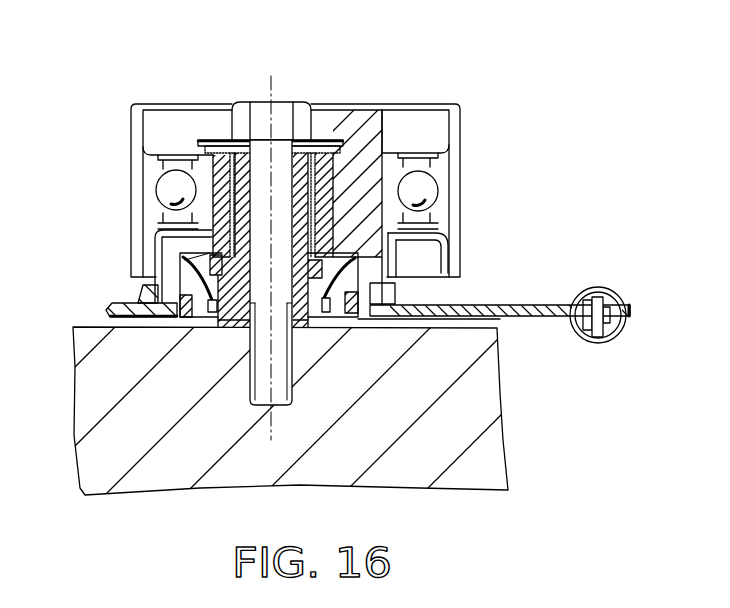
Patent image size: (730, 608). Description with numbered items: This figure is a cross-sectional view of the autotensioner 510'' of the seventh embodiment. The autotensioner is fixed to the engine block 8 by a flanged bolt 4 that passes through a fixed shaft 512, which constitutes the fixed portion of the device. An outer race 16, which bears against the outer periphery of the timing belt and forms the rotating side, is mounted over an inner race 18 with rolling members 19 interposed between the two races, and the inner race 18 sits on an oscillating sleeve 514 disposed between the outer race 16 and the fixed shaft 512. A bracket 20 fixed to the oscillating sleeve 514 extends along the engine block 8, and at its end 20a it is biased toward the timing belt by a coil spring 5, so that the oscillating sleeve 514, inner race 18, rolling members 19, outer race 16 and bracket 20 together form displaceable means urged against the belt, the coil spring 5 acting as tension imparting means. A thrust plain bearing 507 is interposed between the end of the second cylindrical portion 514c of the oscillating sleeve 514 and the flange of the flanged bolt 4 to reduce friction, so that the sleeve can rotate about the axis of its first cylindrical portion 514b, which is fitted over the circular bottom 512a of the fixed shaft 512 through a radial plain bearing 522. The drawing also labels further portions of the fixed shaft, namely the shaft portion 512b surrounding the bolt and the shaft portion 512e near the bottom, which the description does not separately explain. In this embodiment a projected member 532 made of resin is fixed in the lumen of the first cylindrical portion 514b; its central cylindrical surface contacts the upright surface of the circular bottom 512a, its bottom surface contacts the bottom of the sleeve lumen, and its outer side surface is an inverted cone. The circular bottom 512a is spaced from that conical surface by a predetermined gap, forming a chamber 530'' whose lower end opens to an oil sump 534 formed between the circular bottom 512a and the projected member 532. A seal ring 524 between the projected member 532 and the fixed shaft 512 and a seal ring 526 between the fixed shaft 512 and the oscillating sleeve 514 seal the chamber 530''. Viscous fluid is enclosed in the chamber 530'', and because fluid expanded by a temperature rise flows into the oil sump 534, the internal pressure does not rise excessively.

The flanged bolt 4 is at (284, 100).
The coil spring 5 is at (617, 298).
The engine block 8 is at (492, 403).
The outer race 16 is at (450, 196).
The inner race 18 is at (430, 217).
The rolling members 19 is at (430, 183).
The bracket 20 is at (553, 304).
The end of bracket 20a is at (607, 338).
The thrust plain bearing 507 is at (232, 142).
The autotensioner 510'' is at (365, 304).
The fixed shaft 512 is at (170, 328).
The circular bottom 512a is at (237, 327).
The sleeve 512b is at (320, 148).
The sleeve wall 512e is at (310, 345).
The oscillating sleeve 514 is at (350, 163).
The first cylindrical portion 514b is at (160, 240).
The second cylindrical portion 514c is at (382, 152).
The radial plain bearing 522 is at (154, 251).
The seal ring 524 is at (285, 295).
The seal ring 526 is at (396, 296).
The chamber 530'' is at (359, 308).
The projected member 532 is at (396, 264).
The oil sump 534 is at (210, 327).